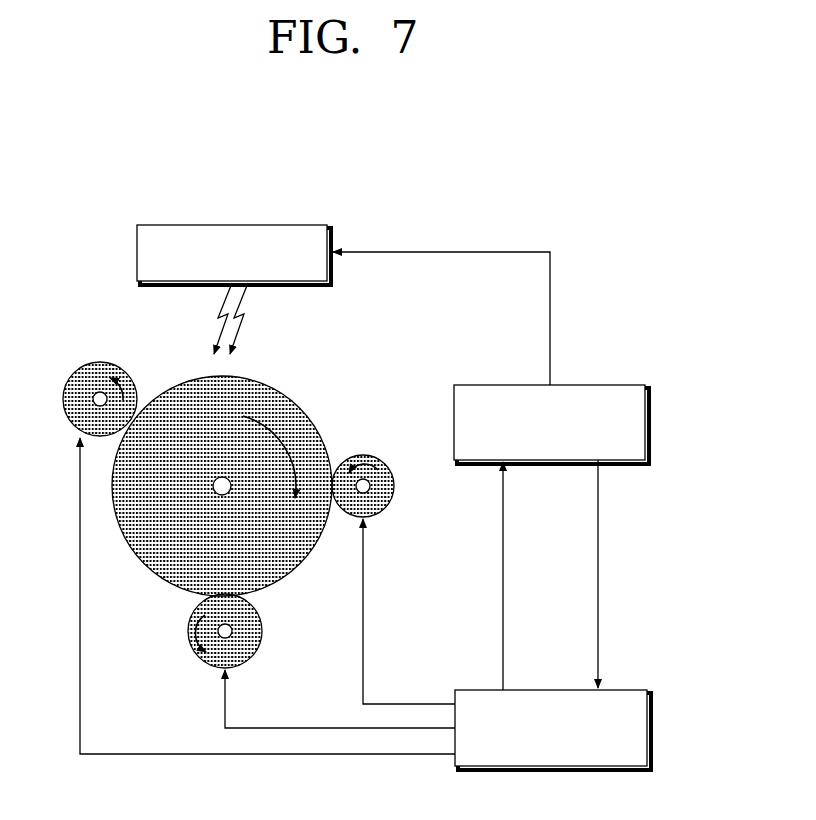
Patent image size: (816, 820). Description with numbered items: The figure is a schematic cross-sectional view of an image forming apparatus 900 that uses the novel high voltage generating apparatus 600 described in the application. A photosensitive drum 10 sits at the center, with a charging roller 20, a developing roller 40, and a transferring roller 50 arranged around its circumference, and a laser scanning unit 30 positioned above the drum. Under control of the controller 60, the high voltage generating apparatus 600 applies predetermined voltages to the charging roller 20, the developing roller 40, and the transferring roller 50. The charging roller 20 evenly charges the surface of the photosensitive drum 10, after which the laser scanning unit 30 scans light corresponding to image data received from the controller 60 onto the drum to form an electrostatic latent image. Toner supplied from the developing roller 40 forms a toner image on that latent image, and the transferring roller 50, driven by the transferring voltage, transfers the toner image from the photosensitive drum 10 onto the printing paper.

The photosensitive drum 10 is at (291, 379).
The charging roller 20 is at (99, 361).
The laser scanning unit (LSU) 30 is at (231, 224).
The developing roller 40 is at (362, 454).
The transferring roller 50 is at (263, 632).
The controller 60 is at (609, 384).
The high voltage generating apparatus 600 is at (629, 689).
The image forming apparatus 900 is at (586, 183).